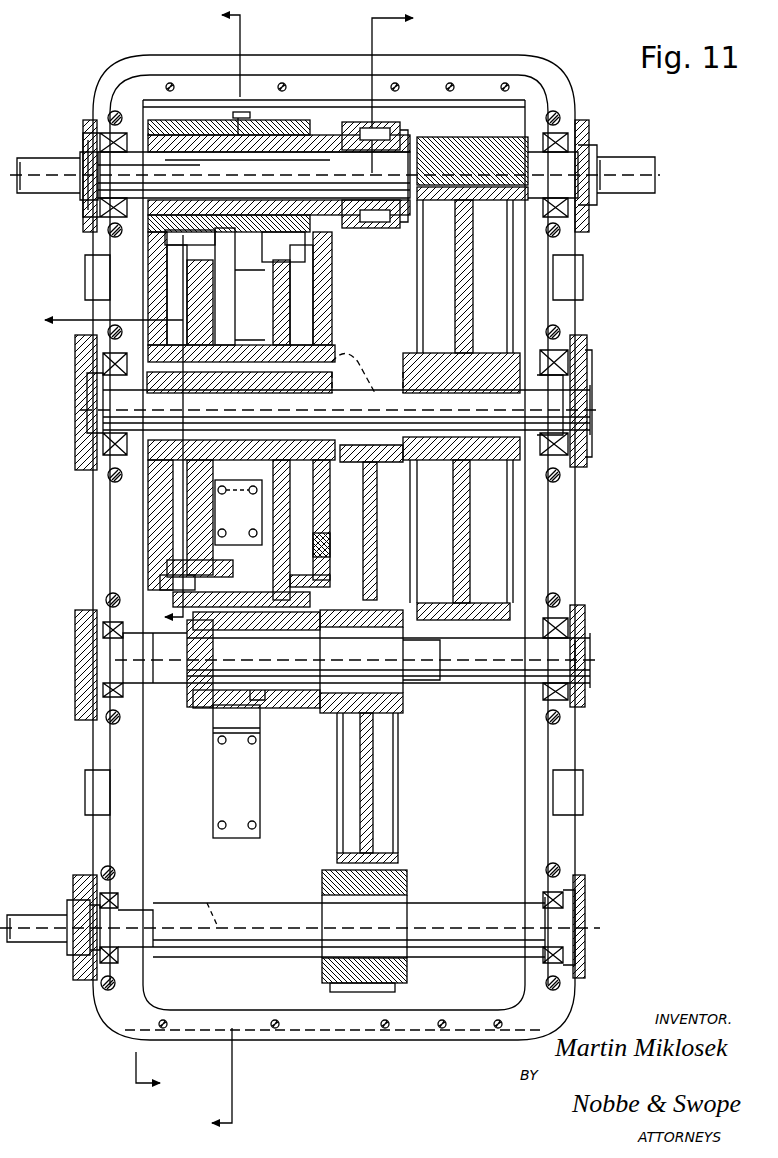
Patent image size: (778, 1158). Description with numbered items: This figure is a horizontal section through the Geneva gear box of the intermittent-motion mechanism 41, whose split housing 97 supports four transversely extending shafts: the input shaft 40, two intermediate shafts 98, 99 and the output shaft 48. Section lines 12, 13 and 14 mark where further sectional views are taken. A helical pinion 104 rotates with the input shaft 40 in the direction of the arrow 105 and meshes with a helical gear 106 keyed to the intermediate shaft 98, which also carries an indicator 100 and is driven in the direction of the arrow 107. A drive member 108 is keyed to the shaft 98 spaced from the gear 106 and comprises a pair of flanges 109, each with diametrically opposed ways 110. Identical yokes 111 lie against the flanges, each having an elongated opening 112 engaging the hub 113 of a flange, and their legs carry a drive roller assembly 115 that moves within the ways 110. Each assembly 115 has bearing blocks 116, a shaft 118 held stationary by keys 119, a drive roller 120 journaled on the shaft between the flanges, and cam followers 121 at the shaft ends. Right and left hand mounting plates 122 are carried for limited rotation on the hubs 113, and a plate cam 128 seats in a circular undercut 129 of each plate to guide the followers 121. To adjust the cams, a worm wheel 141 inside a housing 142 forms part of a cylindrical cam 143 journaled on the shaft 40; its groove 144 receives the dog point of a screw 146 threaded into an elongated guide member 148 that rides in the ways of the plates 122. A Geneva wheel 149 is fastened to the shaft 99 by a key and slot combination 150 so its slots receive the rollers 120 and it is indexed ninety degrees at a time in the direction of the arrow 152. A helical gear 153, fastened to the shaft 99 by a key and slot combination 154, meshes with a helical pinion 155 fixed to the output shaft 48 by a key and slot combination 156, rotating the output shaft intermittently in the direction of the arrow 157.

The section line 12— 12 is at (288, 551).
The section line 13— 13 is at (211, 570).
The section line 14— 14 is at (100, 431).
The input shaft 40 is at (342, 157).
The mechanism 41 is at (673, 658).
The output shaft 48 is at (55, 922).
The split housing 97 is at (537, 847).
The intermediate shaft 98 is at (547, 402).
The intermediate shaft 99 is at (498, 677).
The indicator 100 is at (595, 385).
The helical pinion 104 is at (480, 160).
The arrow 105 is at (640, 185).
The helical gear 106 is at (497, 517).
The arrow 107 is at (345, 388).
The drive member 108 is at (268, 258).
The flanges 109 is at (292, 278).
The ways 110 is at (183, 258).
The yokes 111 is at (173, 282).
The opening 112 is at (173, 468).
The hub 113 is at (195, 347).
The drive roller assembly 115 is at (250, 690).
The bearing blocks 116 is at (173, 598).
The shaft 118 is at (160, 582).
The keys 119 is at (238, 530).
The drive roller 120 is at (239, 512).
The cam followers 121 is at (207, 570).
The mounting plates 122 is at (183, 242).
The plate cam 128 is at (315, 248).
The circular undercut 129 is at (318, 547).
The worm wheel 141 is at (373, 137).
The housing 142 is at (390, 128).
The cylindrical cam 143 is at (283, 143).
The groove 144 is at (247, 160).
The screw 146 is at (242, 110).
The elongated guide member 148 is at (217, 120).
The Geneva wheel 149 is at (233, 750).
The key and slot combination 150 is at (187, 633).
The arrow 152 is at (483, 663).
The helical gear 153 is at (385, 812).
The key and slot combination 154 is at (398, 627).
The helical pinion 155 is at (393, 975).
The key and slot combination 156 is at (375, 903).
The arrow 157 is at (222, 925).